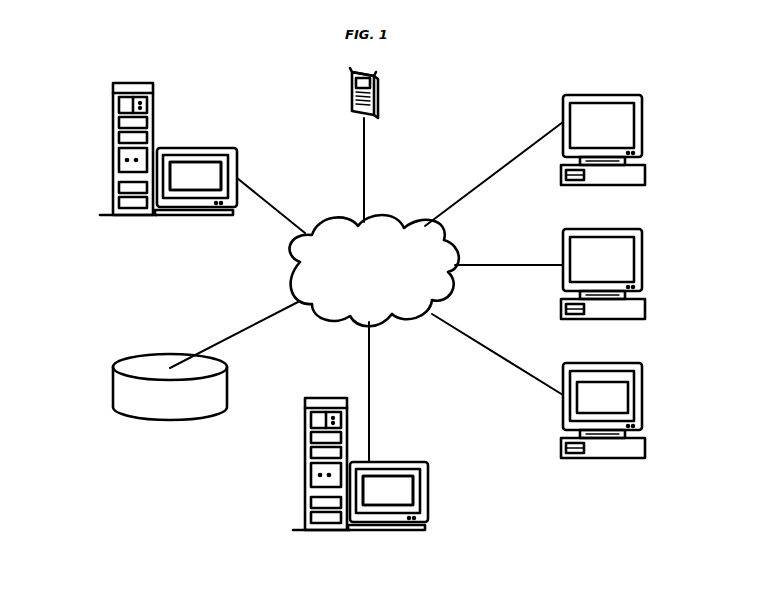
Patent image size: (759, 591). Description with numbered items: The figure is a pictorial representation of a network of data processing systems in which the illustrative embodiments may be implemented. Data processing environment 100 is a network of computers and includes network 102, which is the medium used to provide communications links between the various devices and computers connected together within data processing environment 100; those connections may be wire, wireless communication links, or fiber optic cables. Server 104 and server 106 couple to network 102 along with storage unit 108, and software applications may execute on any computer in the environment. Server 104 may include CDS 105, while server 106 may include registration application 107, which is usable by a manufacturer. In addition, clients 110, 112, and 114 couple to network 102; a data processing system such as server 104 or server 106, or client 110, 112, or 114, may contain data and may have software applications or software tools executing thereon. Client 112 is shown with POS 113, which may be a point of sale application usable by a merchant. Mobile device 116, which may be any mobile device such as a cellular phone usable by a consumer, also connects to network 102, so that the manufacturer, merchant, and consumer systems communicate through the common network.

The data processing environment 100 is at (70, 108).
The network 102 is at (374, 270).
The server 104 is at (168, 159).
The CDS 105 is at (190, 160).
The server 106 is at (360, 474).
The registration application 107 is at (472, 487).
The storage unit 108 is at (170, 388).
The client 110 is at (603, 282).
The client 112 is at (603, 419).
The POS 113 is at (628, 398).
The client 114 is at (603, 149).
The mobile device 116 is at (414, 102).